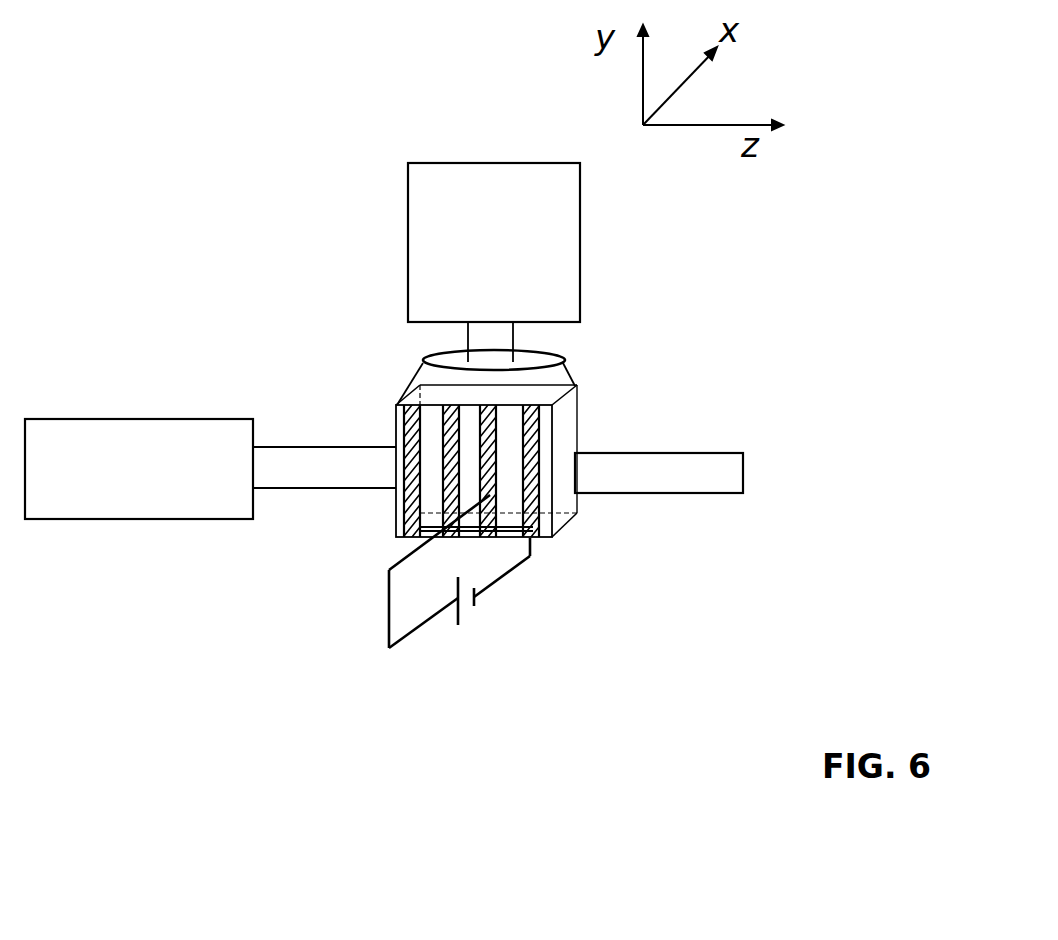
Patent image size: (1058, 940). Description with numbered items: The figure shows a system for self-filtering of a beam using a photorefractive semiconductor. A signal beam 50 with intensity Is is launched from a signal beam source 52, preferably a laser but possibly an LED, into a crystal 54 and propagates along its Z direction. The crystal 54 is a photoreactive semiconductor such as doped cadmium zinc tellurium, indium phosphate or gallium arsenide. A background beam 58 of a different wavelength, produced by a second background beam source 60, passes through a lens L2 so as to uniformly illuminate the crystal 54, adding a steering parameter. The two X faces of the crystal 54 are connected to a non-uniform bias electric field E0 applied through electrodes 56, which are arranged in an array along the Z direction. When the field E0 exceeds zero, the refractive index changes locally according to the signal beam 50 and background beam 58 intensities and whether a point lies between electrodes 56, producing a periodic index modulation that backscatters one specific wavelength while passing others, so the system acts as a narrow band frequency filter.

The signal beam 50 is at (343, 438).
The signal beam source 52 is at (190, 412).
The crystal 54 is at (392, 500).
The electrodes 56 is at (543, 540).
The background beam 58 is at (513, 338).
The background beam source 60 is at (580, 229).
The lens L2 is at (423, 358).
The bias electric field E0 is at (459, 571).